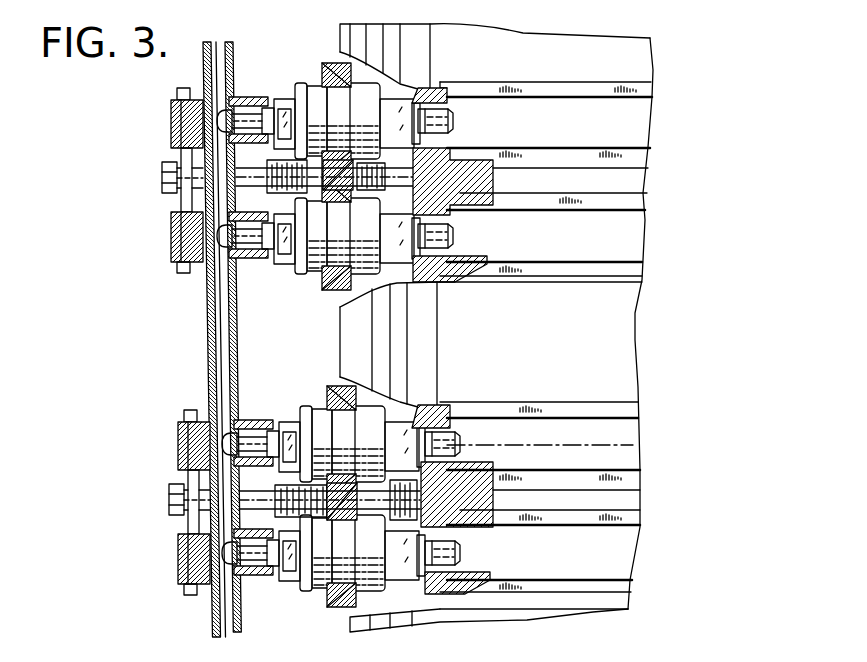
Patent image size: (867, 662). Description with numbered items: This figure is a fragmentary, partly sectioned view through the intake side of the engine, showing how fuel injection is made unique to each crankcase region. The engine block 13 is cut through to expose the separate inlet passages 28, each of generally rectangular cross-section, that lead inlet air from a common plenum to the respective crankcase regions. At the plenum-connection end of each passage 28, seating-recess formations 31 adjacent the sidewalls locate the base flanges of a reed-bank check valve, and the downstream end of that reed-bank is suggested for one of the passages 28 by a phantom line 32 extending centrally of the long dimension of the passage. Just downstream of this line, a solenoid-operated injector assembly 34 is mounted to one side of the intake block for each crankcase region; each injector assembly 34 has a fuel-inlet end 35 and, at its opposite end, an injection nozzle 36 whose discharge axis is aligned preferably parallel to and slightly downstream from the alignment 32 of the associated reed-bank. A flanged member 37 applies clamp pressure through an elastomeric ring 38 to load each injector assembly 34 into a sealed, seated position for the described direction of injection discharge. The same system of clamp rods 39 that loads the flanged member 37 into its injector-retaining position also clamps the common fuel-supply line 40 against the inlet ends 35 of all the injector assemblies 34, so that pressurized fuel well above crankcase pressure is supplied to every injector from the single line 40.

The engine block 13 is at (596, 614).
The inlet passage 28 is at (640, 128).
The seating-recess formation 31 is at (532, 588).
The phantom line 32 is at (577, 447).
The injector assembly 34 is at (305, 76).
The fuel-inlet end 35 is at (260, 562).
The injection nozzle 36 is at (457, 123).
The flanged member 37 is at (332, 63).
The elastomeric ring 38 is at (347, 470).
The clamp rod 39 is at (198, 519).
The fuel-supply line 40 is at (207, 333).